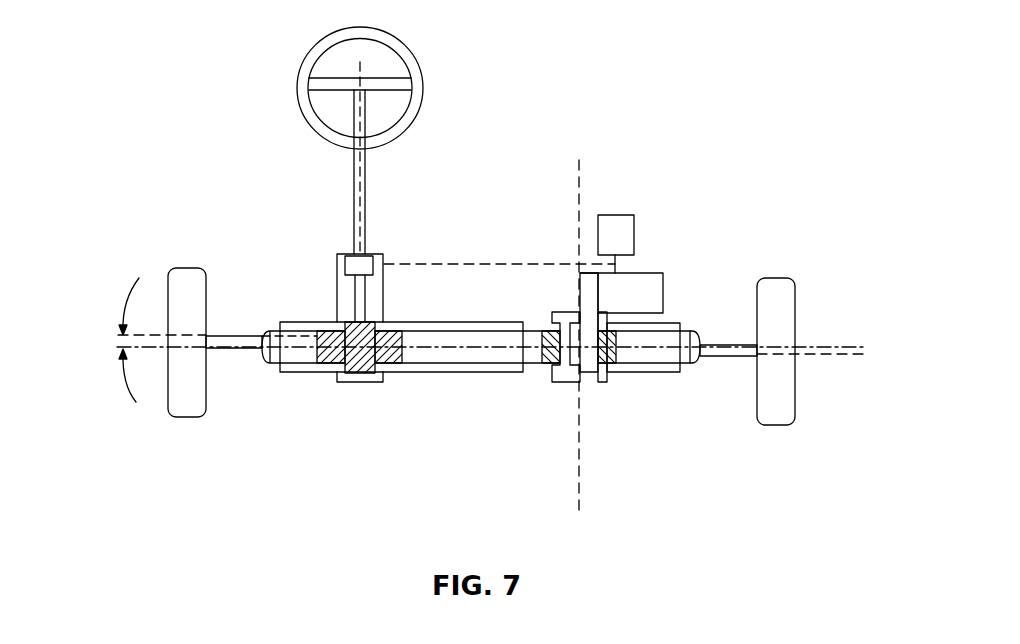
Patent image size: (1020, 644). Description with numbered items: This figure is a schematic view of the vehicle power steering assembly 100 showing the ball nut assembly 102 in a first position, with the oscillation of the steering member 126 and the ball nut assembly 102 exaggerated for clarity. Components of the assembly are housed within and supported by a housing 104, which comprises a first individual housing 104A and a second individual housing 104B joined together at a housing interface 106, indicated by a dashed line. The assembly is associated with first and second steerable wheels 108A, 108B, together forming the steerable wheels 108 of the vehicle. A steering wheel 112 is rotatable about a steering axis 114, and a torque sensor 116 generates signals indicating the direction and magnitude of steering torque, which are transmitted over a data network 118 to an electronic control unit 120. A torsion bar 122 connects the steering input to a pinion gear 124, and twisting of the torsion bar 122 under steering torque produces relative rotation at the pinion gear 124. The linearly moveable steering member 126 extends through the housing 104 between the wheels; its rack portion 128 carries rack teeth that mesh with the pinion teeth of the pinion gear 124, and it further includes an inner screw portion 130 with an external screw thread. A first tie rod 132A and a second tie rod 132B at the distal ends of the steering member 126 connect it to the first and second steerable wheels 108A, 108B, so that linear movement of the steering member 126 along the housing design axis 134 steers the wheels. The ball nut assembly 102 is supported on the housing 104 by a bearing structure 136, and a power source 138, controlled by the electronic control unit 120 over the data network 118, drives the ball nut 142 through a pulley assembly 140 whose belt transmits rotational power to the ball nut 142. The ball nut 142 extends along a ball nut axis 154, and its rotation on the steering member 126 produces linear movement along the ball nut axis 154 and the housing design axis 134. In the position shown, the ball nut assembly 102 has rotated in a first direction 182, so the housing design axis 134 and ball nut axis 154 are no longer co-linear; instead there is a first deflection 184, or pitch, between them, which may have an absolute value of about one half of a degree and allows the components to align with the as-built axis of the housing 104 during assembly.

The vehicle power steering assembly 100 is at (483, 146).
The ball nut assembly 102 is at (592, 404).
The housing 104 is at (390, 320).
The first individual housing 104A is at (500, 378).
The second individual housing 104B is at (677, 378).
The housing interface 106 is at (578, 488).
The steerable wheels 108 is at (357, 195).
The first steerable wheel 108A is at (188, 268).
The second steerable wheel 108B is at (778, 278).
The steering wheel 112 is at (392, 35).
The steering axis 114 is at (361, 165).
The torque sensor 116 is at (352, 253).
The data network 118 is at (408, 263).
The electronic control unit 120 is at (613, 215).
The torsion bar 122 is at (358, 297).
The pinion gear 124 is at (360, 374).
The steering member 126 is at (460, 373).
The rack portion 128 is at (327, 365).
The inner screw portion 130 is at (605, 377).
The first tie rod 132A is at (233, 334).
The second tie rod 132B is at (725, 345).
The housing design axis 134 is at (828, 347).
The bearing structure 136 is at (554, 312).
The power source 138 is at (652, 273).
The pulley assembly 140 is at (578, 272).
The ball nut 142 is at (552, 370).
The ball nut axis 154 is at (828, 356).
The first direction 182 is at (123, 306).
The first deflection 184 is at (127, 378).